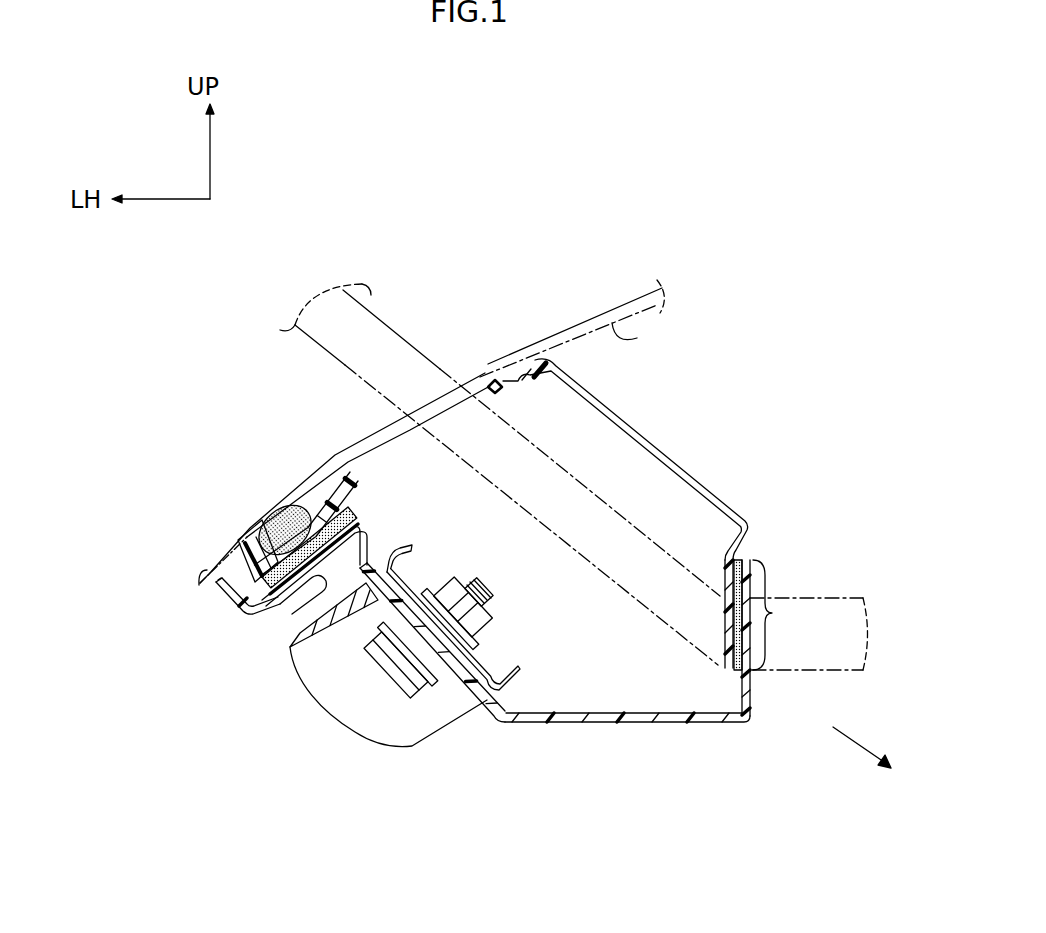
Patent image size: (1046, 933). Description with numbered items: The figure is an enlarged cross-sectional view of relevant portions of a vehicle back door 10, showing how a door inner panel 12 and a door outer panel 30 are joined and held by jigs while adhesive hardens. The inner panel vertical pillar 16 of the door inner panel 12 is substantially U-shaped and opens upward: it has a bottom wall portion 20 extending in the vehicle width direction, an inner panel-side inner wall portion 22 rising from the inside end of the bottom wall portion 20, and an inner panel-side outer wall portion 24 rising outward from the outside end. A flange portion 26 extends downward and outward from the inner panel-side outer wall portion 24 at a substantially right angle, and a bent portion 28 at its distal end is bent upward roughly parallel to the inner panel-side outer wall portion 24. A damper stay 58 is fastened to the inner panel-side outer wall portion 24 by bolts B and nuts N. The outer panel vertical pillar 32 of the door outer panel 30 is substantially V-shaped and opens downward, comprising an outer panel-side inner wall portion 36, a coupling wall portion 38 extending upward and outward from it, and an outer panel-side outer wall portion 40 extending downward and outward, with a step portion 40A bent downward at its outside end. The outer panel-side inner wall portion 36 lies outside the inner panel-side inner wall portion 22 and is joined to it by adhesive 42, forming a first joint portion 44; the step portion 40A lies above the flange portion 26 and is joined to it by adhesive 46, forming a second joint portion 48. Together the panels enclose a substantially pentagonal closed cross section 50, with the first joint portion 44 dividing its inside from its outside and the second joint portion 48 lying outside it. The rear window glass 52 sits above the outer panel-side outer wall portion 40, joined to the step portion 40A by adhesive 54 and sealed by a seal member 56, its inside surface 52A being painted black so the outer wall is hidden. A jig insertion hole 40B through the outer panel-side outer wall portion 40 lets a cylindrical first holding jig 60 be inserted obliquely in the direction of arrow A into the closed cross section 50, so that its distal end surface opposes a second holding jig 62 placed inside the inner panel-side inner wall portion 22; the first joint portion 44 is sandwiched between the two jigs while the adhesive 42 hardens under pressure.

The vehicle back door 10 is at (490, 166).
The door inner panel 12 is at (478, 728).
The inner panel vertical pillar 16 is at (496, 727).
The bottom wall portion 20 is at (620, 724).
The inner panel-side inner wall portion 22 is at (753, 700).
The inner panel-side outer wall portion 24 is at (472, 704).
The flange portion 26 is at (254, 613).
The bent portion 28 is at (220, 583).
The door outer panel 30 is at (671, 510).
The outer panel vertical pillar 32 is at (680, 461).
The outer panel-side inner wall portion 36 is at (727, 630).
The coupling wall portion 38 is at (627, 422).
The outer panel-side outer wall portion 40 is at (352, 470).
The step portion 40A is at (333, 508).
The jig insertion hole 40B is at (487, 386).
The adhesive 42 is at (740, 557).
The first joint portion 44 is at (782, 615).
The adhesive 46 is at (350, 512).
The second joint portion 48 is at (297, 602).
The closed cross section 50 is at (533, 556).
The rear window glass 52 is at (583, 322).
The inside surface 52A is at (640, 337).
The adhesive 54 is at (265, 510).
The seal member 56 is at (247, 535).
The damper stay 58 is at (312, 700).
The first holding jig 60 is at (371, 306).
The second holding jig 62 is at (847, 597).
The arrow A is at (858, 742).
The bolt B is at (378, 680).
The nut N is at (497, 627).